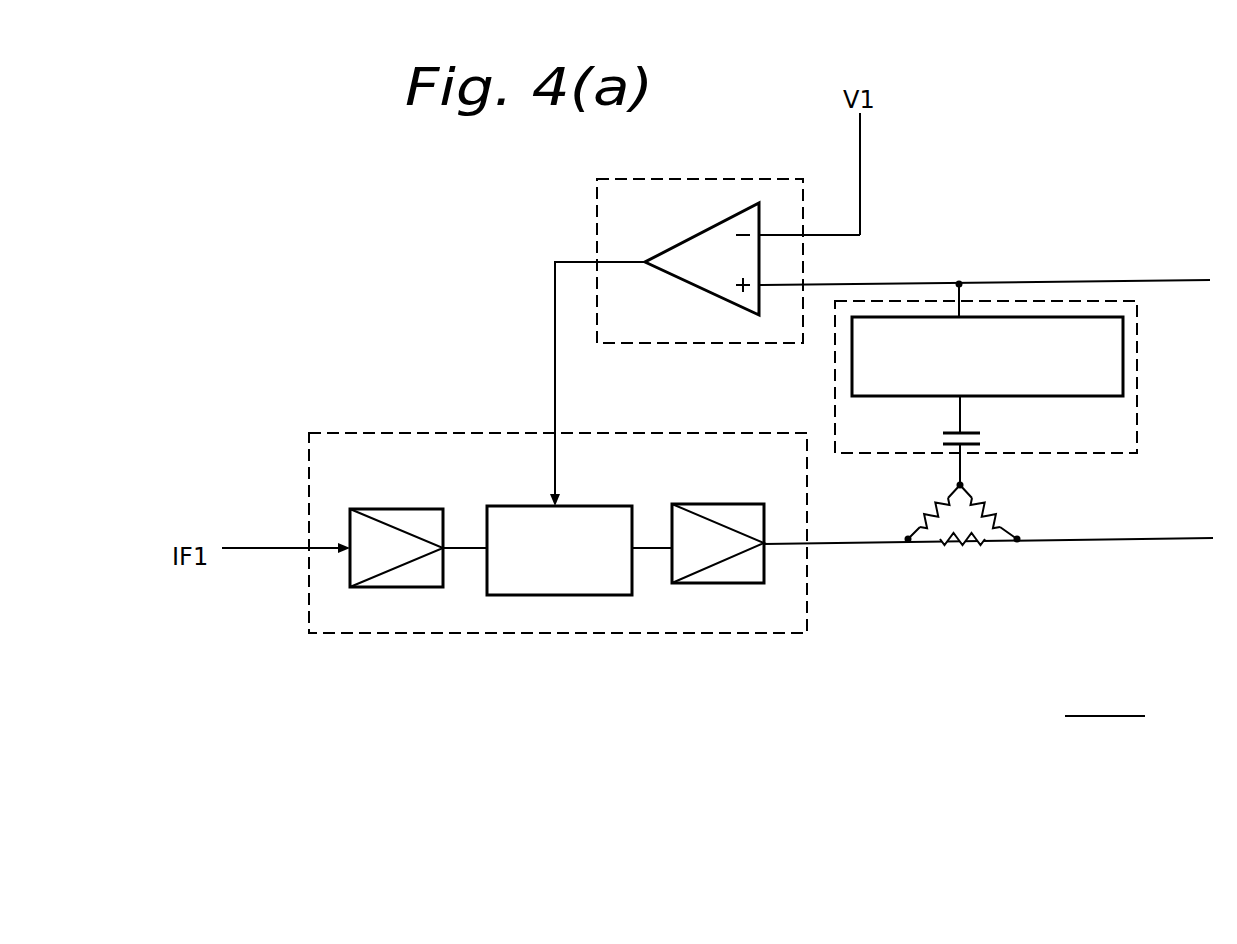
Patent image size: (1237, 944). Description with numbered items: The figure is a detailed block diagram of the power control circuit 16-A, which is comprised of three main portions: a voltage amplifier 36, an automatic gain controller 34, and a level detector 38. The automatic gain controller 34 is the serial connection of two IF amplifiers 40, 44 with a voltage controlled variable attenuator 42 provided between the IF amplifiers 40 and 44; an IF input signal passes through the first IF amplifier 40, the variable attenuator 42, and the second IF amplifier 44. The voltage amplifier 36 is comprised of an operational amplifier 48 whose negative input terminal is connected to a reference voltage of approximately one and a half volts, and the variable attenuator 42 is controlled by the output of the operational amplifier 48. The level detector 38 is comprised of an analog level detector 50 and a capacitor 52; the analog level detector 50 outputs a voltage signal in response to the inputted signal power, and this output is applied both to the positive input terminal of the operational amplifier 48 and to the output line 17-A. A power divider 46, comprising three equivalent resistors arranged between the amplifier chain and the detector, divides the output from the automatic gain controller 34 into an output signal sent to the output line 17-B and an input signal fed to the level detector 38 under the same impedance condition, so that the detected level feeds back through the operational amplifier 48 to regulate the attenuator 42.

The automatic gain controller 34 is at (398, 433).
The voltage amplifier 36 is at (640, 179).
The level detector 38 is at (1137, 412).
The IF amplifier 40 is at (405, 588).
The voltage controlled variable attenuator 42 is at (557, 596).
The IF amplifier 44 is at (722, 584).
The power divider 46 is at (992, 540).
The operational amplifier 48 is at (750, 205).
The analog level detector 50 is at (1124, 346).
The capacitor 52 is at (990, 432).
The output line 17-A is at (1178, 279).
The output line 17-B is at (1188, 538).
The power control circuit 16-A is at (1105, 705).